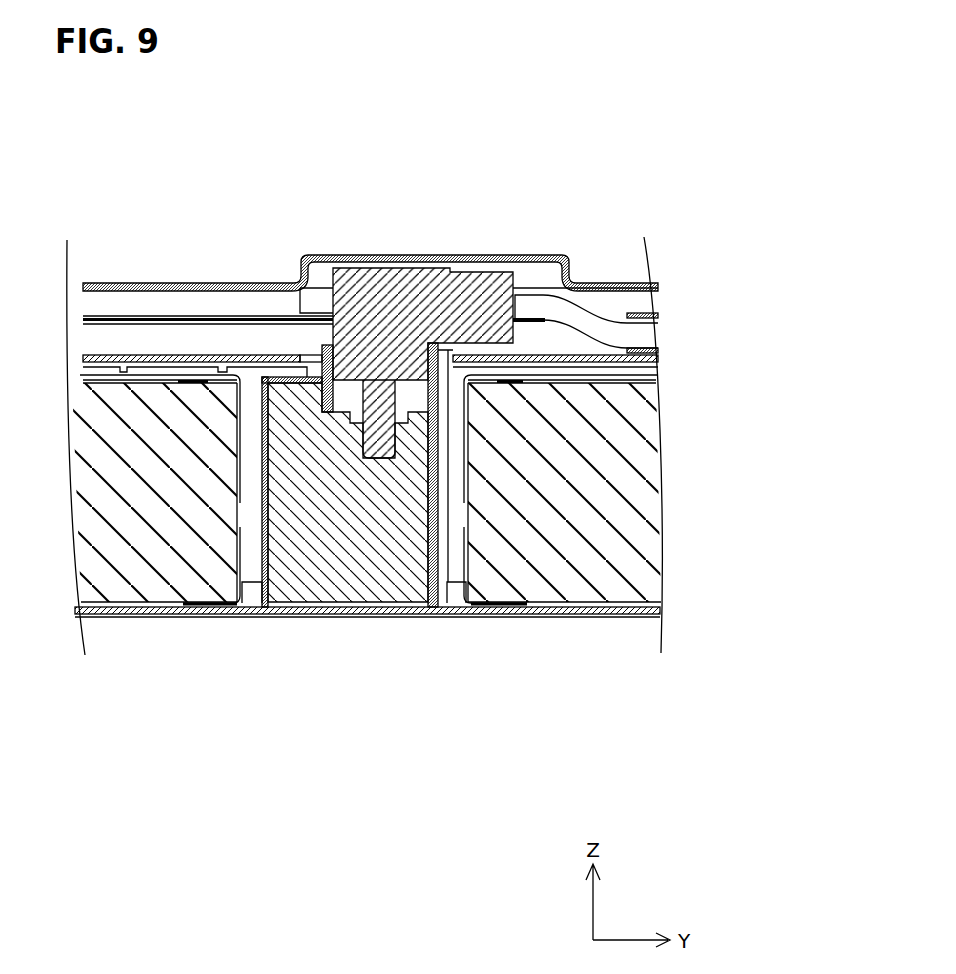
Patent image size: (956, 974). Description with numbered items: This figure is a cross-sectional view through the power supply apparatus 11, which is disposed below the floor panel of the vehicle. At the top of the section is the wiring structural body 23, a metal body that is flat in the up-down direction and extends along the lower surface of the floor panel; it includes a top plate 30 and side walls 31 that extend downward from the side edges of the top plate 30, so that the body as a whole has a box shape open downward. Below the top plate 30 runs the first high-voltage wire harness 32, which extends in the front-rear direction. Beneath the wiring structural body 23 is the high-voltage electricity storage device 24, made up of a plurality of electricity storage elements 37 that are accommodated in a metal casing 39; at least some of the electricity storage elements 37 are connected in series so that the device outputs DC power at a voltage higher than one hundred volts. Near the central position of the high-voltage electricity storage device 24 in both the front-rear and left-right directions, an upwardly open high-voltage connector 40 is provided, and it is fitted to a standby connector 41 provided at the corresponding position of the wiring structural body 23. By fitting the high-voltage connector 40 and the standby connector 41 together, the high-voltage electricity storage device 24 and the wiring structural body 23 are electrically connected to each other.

The power supply apparatus 11 is at (522, 159).
The wiring structural body 23 is at (370, 251).
The top plate 30 is at (148, 283).
The side walls 31 is at (218, 314).
The first high-voltage wire harness 32 is at (580, 318).
The high-voltage connector 40 is at (323, 360).
The standby connector 41 is at (387, 290).
The high-voltage electricity storage device 24 is at (364, 556).
The electricity storage elements 37 is at (150, 577).
The metal casing 39 is at (354, 577).